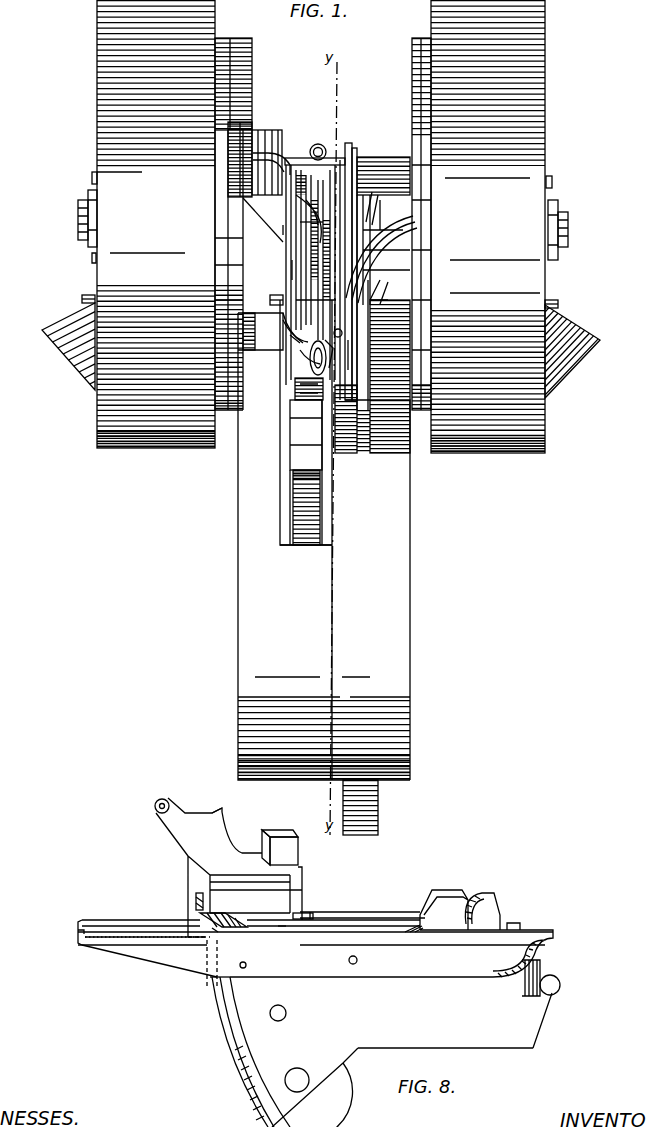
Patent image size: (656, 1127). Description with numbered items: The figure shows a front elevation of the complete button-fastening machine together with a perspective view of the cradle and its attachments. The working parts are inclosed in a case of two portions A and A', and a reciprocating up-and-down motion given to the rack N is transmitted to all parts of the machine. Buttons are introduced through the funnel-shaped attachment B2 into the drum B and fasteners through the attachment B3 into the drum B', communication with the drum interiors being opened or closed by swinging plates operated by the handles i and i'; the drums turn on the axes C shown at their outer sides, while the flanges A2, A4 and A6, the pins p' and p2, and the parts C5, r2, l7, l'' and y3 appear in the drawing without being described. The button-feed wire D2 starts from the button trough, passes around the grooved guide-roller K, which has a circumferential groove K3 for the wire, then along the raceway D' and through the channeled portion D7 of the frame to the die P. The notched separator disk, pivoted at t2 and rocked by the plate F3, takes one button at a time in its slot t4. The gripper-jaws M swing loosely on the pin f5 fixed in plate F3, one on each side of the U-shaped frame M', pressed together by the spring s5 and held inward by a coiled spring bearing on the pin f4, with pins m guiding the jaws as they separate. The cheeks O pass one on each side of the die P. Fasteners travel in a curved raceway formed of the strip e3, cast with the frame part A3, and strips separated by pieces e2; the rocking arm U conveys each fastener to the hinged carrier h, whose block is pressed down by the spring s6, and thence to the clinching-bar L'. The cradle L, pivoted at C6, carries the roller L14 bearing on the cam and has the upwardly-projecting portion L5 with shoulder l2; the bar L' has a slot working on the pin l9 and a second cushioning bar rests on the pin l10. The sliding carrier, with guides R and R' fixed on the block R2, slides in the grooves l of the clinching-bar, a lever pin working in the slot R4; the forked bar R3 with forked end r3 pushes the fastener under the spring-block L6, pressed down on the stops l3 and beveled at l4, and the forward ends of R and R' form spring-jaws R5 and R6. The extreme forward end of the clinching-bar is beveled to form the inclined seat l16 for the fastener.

In FIG. 1, the case portion A is at (324, 540).
In FIG. 1, the case portion A' is at (377, 497).
In FIG. 1, the frame flange A2 is at (252, 58).
In FIG. 1, the frame part A3 is at (412, 67).
In FIG. 1, the frame bracket A4 is at (377, 168).
In FIG. 1, the frame boss A6 is at (343, 400).
In FIG. 1, the button drum B is at (156, 224).
In FIG. 1, the fastener drum B' is at (488, 226).
In FIG. 1, the funnel-shaped attachment B2 is at (72, 366).
In FIG. 1, the funnel-shaped attachment B3 is at (573, 364).
In FIG. 1, the shaft C is at (78, 218).
In FIG. 8, the pivot pin C5 is at (297, 1080).
In FIG. 8, the cradle pivot C6 is at (558, 986).
In FIG. 1, the pin p' is at (82, 174).
In FIG. 1, the pin p2 is at (552, 183).
In FIG. 1, the handle i is at (78, 296).
In FIG. 1, the handle i' is at (562, 301).
In FIG. 1, the guide-roller K is at (246, 156).
In FIG. 1, the circumferential groove K3 is at (233, 177).
In FIG. 1, the button-feed wire D2 is at (270, 149).
In FIG. 1, the raceway D' is at (312, 146).
In FIG. 1, the channeled portion D7 is at (302, 250).
In FIG. 1, the pin f4 is at (346, 152).
In FIG. 1, the plate F3 is at (354, 158).
In FIG. 1, the pin f5 is at (263, 220).
In FIG. 1, the slot t4 is at (300, 222).
In FIG. 1, the pivot t2 is at (372, 201).
In FIG. 1, the spring s5 is at (283, 229).
In FIG. 1, the spring s6 is at (343, 357).
In FIG. 1, the gripper-jaws M is at (280, 339).
In FIG. 1, the U-shaped frame M' is at (273, 269).
In FIG. 1, the guide pins m is at (270, 299).
In FIG. 1, the cheeks O is at (283, 329).
In FIG. 1, the die P is at (306, 368).
In FIG. 1, the carrier guide R is at (334, 470).
In FIG. 8, the carrier guide R is at (391, 950).
In FIG. 1, the carrier guide R' is at (297, 391).
In FIG. 8, the carrier block R2 is at (444, 910).
In FIG. 8, the forked bar R3 is at (362, 912).
In FIG. 8, the slot R4 is at (476, 896).
In FIG. 8, the spring-jaw R5 is at (228, 920).
In FIG. 8, the spring-jaw R6 is at (246, 926).
In FIG. 8, the pin r2 is at (213, 916).
In FIG. 8, the forked end r3 is at (313, 913).
In FIG. 1, the cradle L is at (305, 496).
In FIG. 8, the cradle L is at (382, 1041).
In FIG. 1, the clinching-bar L' is at (306, 434).
In FIG. 8, the clinching-bar L' is at (311, 957).
In FIG. 8, the upwardly-projecting portion L5 is at (280, 847).
In FIG. 8, the spring-block L6 is at (196, 898).
In FIG. 1, the roller L14 is at (293, 497).
In FIG. 8, the roller L14 is at (312, 1095).
In FIG. 8, the grooves l is at (315, 941).
In FIG. 8, the shoulder l2 is at (303, 868).
In FIG. 8, the stops l3 is at (209, 827).
In FIG. 8, the bevel l4 is at (157, 800).
In FIG. 8, the bar tip l7 is at (221, 815).
In FIG. 8, the pin l9 is at (248, 967).
In FIG. 8, the pin l10 is at (286, 1014).
In FIG. 8, the inclined seat l16 is at (93, 921).
In FIG. 8, the pin l'' is at (284, 912).
In FIG. 1, the hinged fastener-carrier side piece h is at (327, 356).
In FIG. 1, the pin y3 is at (342, 344).
In FIG. 1, the rocking arm U is at (362, 379).
In FIG. 1, the separating pieces e2 is at (390, 240).
In FIG. 1, the raceway strip e3 is at (398, 248).
In FIG. 1, the rack N is at (380, 814).